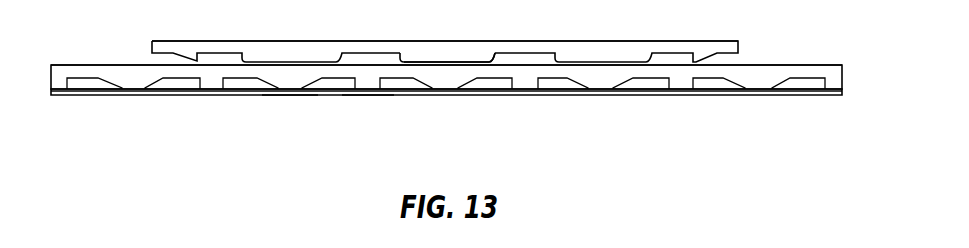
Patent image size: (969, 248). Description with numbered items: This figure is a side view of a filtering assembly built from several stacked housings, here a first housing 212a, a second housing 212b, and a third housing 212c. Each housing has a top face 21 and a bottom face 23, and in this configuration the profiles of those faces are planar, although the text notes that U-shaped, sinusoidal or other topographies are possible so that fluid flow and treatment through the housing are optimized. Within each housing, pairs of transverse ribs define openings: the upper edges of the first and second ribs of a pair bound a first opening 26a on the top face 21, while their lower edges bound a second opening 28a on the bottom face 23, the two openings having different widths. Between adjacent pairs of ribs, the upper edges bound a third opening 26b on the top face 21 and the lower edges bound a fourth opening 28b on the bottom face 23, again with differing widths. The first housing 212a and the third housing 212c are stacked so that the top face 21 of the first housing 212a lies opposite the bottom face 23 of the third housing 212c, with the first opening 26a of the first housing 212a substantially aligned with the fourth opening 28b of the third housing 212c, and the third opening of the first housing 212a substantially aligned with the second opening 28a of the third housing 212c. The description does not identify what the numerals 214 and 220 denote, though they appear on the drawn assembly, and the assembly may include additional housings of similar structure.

The top face 21 is at (682, 41).
The bottom face 23 is at (617, 80).
The first opening 26a is at (492, 72).
The third opening 26b is at (400, 72).
The second opening 28a is at (402, 62).
The fourth opening 28b is at (497, 62).
The first housing 212a is at (123, 65).
The second housing 212b is at (170, 95).
The third housing 212c is at (212, 41).
The via 214 is at (312, 95).
The second circuit board 220 is at (220, 64).